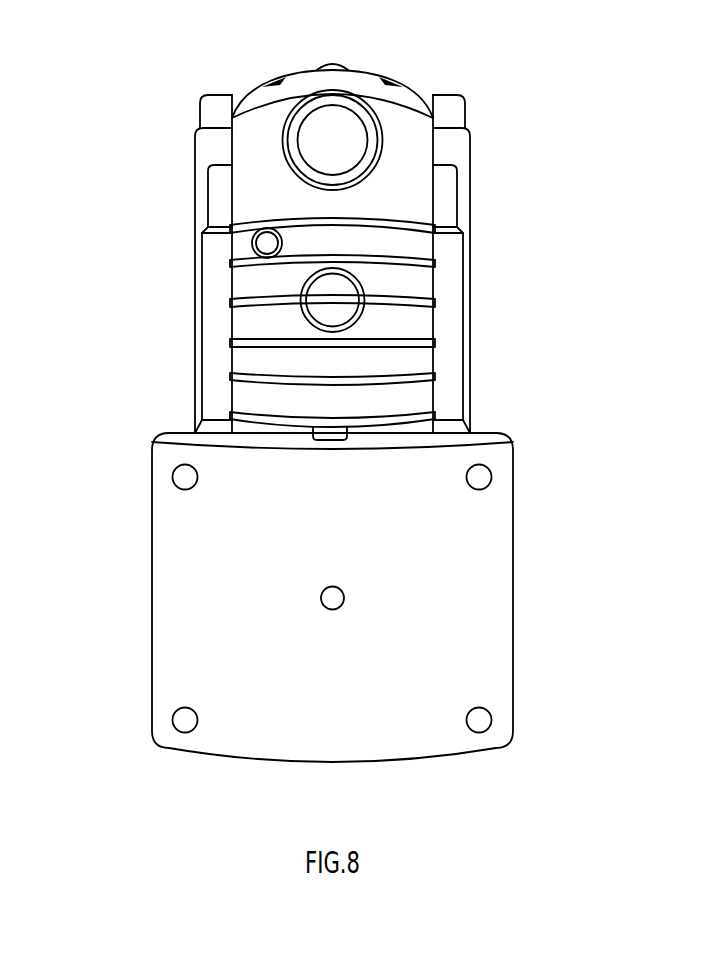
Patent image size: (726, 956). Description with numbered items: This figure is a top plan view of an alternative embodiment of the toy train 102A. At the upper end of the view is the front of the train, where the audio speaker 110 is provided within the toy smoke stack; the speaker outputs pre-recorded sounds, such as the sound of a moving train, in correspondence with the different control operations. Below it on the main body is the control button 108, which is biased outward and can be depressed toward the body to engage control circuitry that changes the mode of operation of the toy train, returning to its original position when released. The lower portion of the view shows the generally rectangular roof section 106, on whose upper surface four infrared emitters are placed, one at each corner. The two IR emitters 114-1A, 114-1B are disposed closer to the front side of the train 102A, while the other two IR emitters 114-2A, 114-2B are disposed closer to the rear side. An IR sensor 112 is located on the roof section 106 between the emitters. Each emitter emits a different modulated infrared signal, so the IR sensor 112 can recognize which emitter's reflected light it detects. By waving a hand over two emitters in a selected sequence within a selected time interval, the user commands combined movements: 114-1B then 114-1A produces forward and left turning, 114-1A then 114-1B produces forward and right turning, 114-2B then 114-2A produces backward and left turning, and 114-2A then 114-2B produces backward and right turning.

The toy train 102A is at (567, 232).
The roof section 106 is at (498, 627).
The control button 108 is at (343, 297).
The audio speaker 110 is at (343, 115).
The IR sensor 112 is at (342, 593).
The IR emitter 114-1A is at (181, 478).
The IR emitter 114-1B is at (484, 478).
The IR emitter 114-2A is at (184, 721).
The IR emitter 114-2B is at (480, 718).